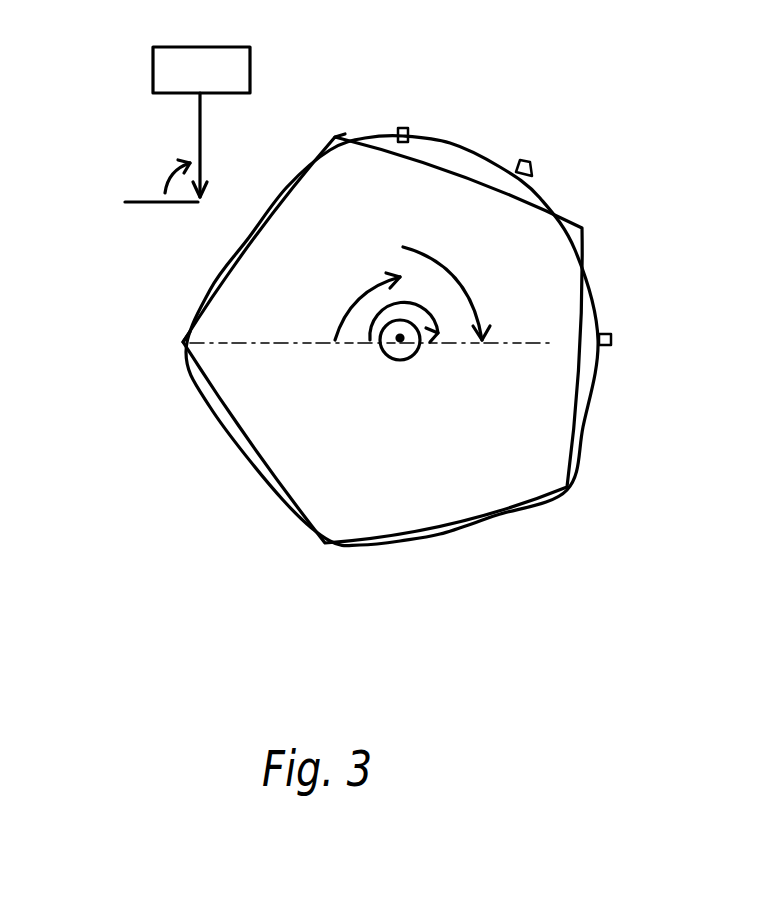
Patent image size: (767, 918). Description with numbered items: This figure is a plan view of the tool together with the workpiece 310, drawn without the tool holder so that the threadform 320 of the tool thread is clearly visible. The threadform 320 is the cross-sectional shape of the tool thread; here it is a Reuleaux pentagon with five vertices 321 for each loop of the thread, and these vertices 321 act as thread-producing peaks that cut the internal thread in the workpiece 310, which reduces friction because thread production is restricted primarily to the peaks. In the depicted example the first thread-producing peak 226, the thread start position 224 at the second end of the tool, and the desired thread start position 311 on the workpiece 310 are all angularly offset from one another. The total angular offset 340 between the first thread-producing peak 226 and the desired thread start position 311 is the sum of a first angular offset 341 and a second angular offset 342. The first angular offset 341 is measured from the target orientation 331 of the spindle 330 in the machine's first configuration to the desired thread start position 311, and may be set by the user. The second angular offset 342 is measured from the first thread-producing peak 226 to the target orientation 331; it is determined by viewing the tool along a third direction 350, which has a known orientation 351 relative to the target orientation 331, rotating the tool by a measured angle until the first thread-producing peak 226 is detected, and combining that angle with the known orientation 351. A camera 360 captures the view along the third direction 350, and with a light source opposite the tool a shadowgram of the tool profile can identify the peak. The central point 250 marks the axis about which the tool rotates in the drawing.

The workpiece 310 is at (598, 315).
The desired thread start position 311 is at (608, 347).
The threadform 320 is at (552, 530).
The vertices 321 is at (333, 125).
The target orientation 331 is at (408, 118).
The thread start position 224 is at (532, 165).
The first thread-producing peak 226 is at (185, 355).
The spindle 330 is at (420, 354).
The rotation axis 250 is at (400, 342).
The angular offset 340 is at (368, 346).
The first angular offset 341 is at (477, 280).
The second angular offset 342 is at (352, 292).
The third direction 350 is at (208, 130).
The known orientation 351 is at (160, 175).
The camera 360 is at (152, 52).